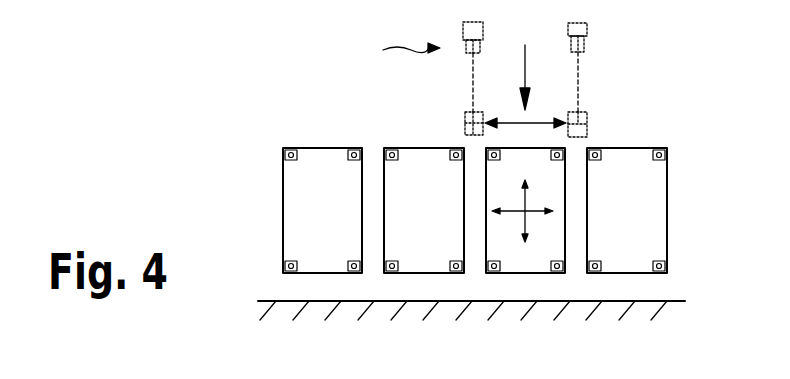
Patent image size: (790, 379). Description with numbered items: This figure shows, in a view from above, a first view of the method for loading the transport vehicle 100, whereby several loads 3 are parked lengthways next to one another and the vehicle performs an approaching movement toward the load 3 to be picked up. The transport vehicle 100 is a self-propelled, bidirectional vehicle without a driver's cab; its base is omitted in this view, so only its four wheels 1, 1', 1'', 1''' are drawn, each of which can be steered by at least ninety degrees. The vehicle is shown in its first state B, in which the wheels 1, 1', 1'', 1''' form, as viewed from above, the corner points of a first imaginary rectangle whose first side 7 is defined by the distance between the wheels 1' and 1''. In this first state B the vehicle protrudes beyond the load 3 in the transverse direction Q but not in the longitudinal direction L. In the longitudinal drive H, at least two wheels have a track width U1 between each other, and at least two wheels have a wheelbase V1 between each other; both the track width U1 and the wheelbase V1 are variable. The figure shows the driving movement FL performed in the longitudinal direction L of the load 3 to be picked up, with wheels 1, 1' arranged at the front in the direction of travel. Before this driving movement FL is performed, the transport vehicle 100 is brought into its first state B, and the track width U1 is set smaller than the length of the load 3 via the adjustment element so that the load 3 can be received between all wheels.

The transport vehicle 100 is at (610, 71).
The load 3 is at (547, 243).
The wheel 1 is at (597, 130).
The wheel 1' is at (454, 132).
The wheel 1'' is at (450, 31).
The wheel 1''' is at (610, 32).
The first side of the first imaginary rectangle 7 is at (473, 85).
The wheelbase V1 is at (580, 95).
The longitudinal drive H is at (525, 72).
The driving movement in the longitudinal direction FL is at (526, 72).
The first state B is at (401, 49).
The track width U1 is at (546, 125).
The longitudinal direction L is at (525, 224).
The transverse direction Q is at (536, 208).